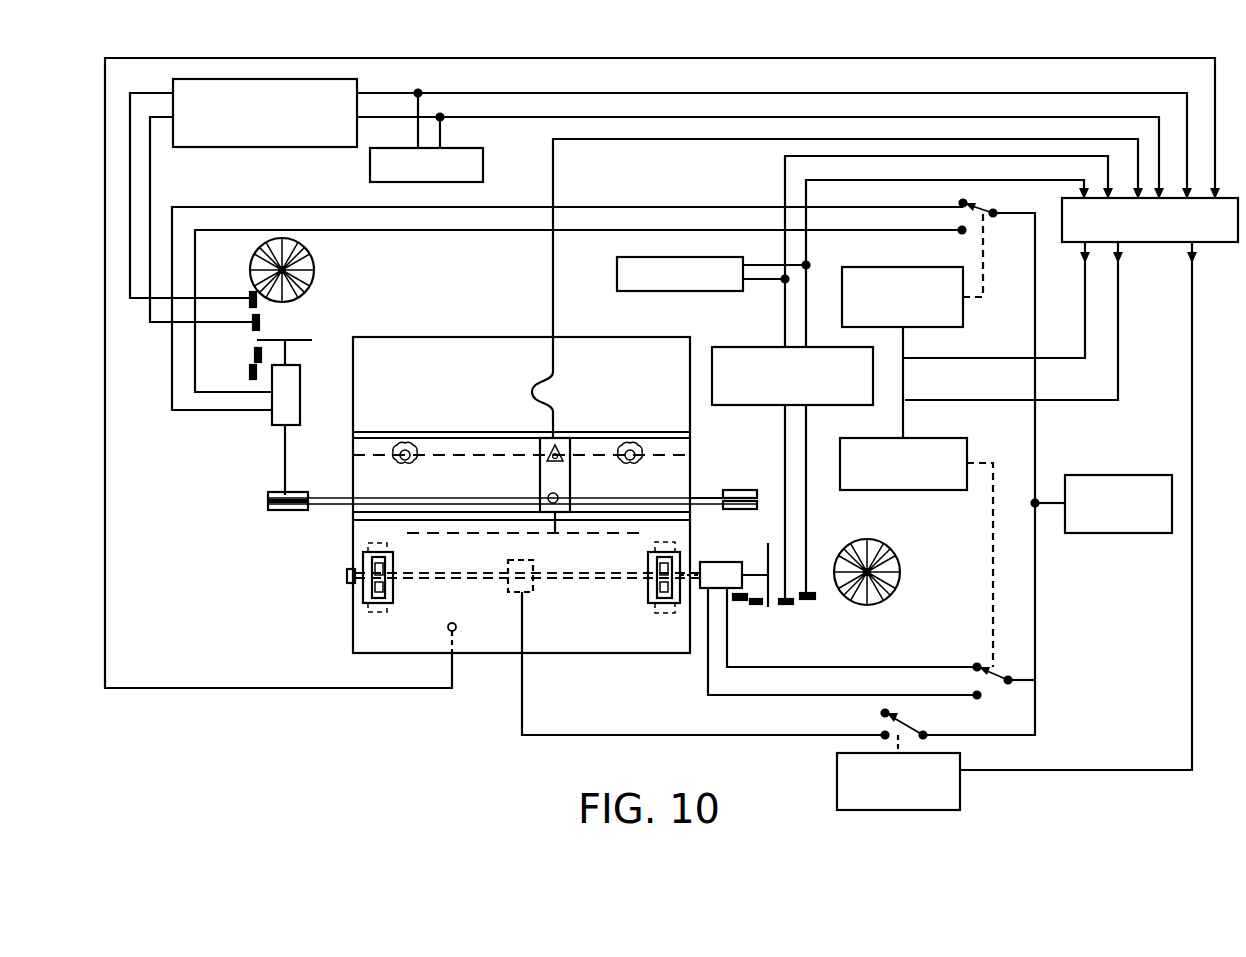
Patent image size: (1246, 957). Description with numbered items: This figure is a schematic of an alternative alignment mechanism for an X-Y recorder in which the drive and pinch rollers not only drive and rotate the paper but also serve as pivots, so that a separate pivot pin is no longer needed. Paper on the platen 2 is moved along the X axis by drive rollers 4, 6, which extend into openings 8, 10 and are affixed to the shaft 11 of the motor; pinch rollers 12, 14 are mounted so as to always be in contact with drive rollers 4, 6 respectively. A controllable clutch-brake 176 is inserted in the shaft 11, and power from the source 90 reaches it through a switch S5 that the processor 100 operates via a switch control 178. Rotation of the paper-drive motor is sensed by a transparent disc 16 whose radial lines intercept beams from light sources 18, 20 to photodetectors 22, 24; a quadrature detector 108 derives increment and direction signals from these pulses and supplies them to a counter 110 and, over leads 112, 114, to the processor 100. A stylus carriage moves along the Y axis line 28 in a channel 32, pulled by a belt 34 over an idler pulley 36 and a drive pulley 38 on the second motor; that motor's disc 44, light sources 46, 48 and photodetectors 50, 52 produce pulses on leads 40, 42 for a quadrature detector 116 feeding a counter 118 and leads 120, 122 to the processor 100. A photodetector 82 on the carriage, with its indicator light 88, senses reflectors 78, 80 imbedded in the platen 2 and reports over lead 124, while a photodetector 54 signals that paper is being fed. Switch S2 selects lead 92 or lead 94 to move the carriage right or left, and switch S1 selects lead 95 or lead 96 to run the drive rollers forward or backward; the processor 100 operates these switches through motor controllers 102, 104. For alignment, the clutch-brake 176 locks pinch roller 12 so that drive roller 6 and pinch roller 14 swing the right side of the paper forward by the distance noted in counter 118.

The platen 2 is at (435, 337).
The drive roller 4 is at (378, 612).
The drive roller 6 is at (662, 612).
The opening 8 is at (393, 560).
The opening 10 is at (648, 560).
The shaft 11 is at (533, 592).
The pinch roller 12 is at (388, 595).
The pinch roller 14 is at (655, 590).
The transparent disc 16 is at (893, 548).
The light source 18 is at (740, 602).
The light source 20 is at (757, 605).
The photodetector 22 is at (808, 600).
The photodetector 24 is at (787, 605).
The line 28 is at (547, 533).
The channel 32 is at (473, 432).
The belt 34 is at (730, 490).
The idler pulley 36 is at (740, 507).
The drive pulley 38 is at (292, 512).
The lead 40 is at (163, 322).
The lead 42 is at (143, 298).
The disc 44 is at (302, 297).
The light source 46 is at (255, 353).
The light source 48 is at (250, 371).
The photodetector 50 is at (253, 322).
The photodetector 52 is at (250, 296).
The photodetector 54 is at (458, 624).
The reflector 78 is at (405, 445).
The reflector 80 is at (640, 462).
The photodetector 82 is at (550, 458).
The light 88 is at (560, 498).
The power source 90 is at (1097, 475).
The lead 92 is at (648, 207).
The lead 94 is at (362, 232).
The lead 95 is at (877, 667).
The lead 96 is at (775, 695).
The processor 100 is at (1160, 242).
The motor controller 102 is at (963, 327).
The motor controller 104 is at (957, 438).
The quadrature detector 108 is at (873, 370).
The counter 110 is at (662, 291).
The lead 112 is at (780, 180).
The lead 114 is at (806, 264).
The quadrature detector 116 is at (258, 148).
The counter 118 is at (483, 165).
The lead 120 is at (668, 92).
The lead 122 is at (488, 120).
The lead 124 is at (553, 290).
The clutch-brake 176 is at (525, 592).
The switch control 178 is at (960, 785).
The switch S1 is at (1000, 684).
The switch S2 is at (978, 208).
The switch S5 is at (905, 722).